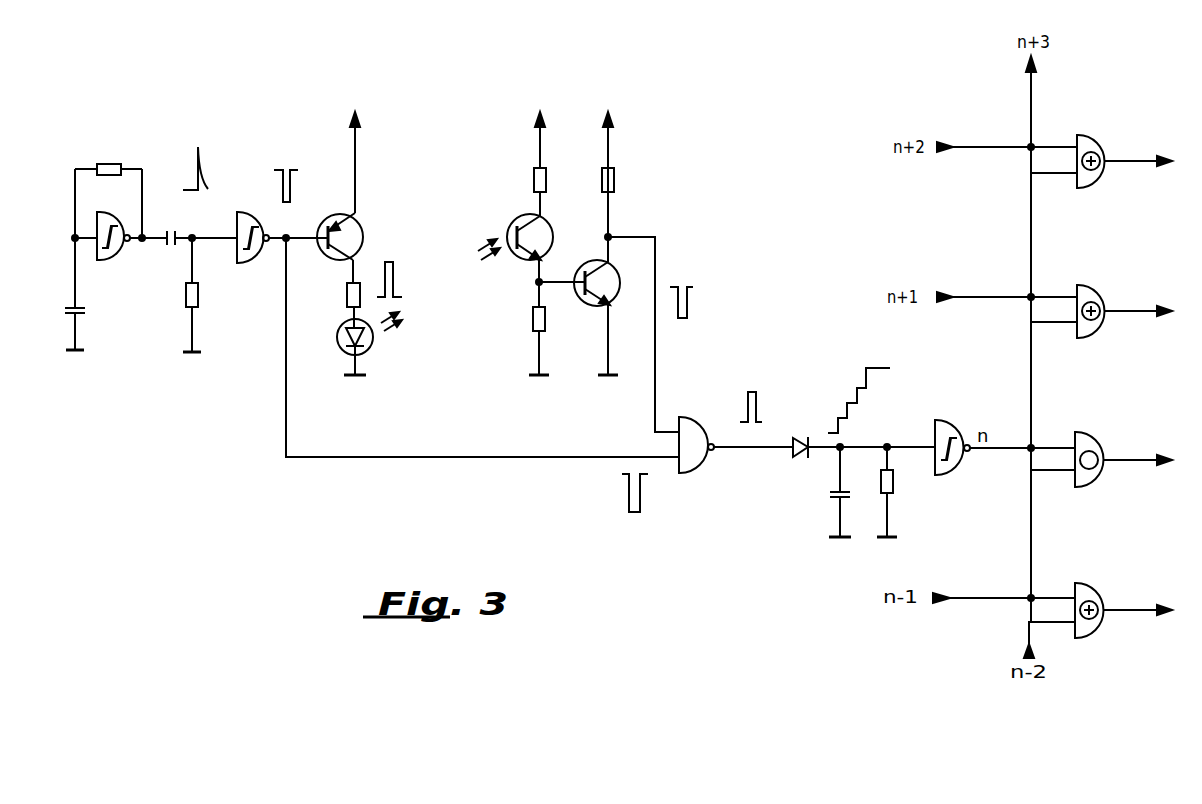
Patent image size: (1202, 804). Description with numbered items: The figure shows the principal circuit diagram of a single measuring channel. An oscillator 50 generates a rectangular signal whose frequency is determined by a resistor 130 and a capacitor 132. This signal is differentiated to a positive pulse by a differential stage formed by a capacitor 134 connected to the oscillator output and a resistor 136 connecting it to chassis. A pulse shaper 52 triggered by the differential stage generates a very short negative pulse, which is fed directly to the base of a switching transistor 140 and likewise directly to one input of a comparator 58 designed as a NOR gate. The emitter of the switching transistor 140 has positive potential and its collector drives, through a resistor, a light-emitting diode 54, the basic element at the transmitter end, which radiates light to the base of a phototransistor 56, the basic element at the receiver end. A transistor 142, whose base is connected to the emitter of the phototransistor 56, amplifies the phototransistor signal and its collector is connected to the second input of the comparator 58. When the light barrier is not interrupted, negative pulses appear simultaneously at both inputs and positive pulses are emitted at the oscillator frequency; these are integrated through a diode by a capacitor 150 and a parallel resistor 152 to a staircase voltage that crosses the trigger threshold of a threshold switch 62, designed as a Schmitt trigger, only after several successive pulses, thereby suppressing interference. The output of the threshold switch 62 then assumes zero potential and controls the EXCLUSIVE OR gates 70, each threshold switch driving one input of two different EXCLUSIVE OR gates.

The oscillator 50 is at (107, 261).
The pulse shaper 52 is at (239, 212).
The light-emitting diode 54 is at (372, 352).
The phototransistor 56 is at (517, 214).
The comparator 58 is at (692, 466).
The threshold switch 62 is at (938, 420).
The EXCLUSIVE OR gates 70 is at (1092, 137).
The resistor 130 is at (112, 164).
The capacitor 132 is at (83, 320).
The capacitor 134 is at (162, 261).
The resistor 136 is at (198, 297).
The switching transistor 140 is at (360, 224).
The transistor 142 is at (587, 304).
The capacitor 150 is at (834, 502).
The resistor 152 is at (893, 493).